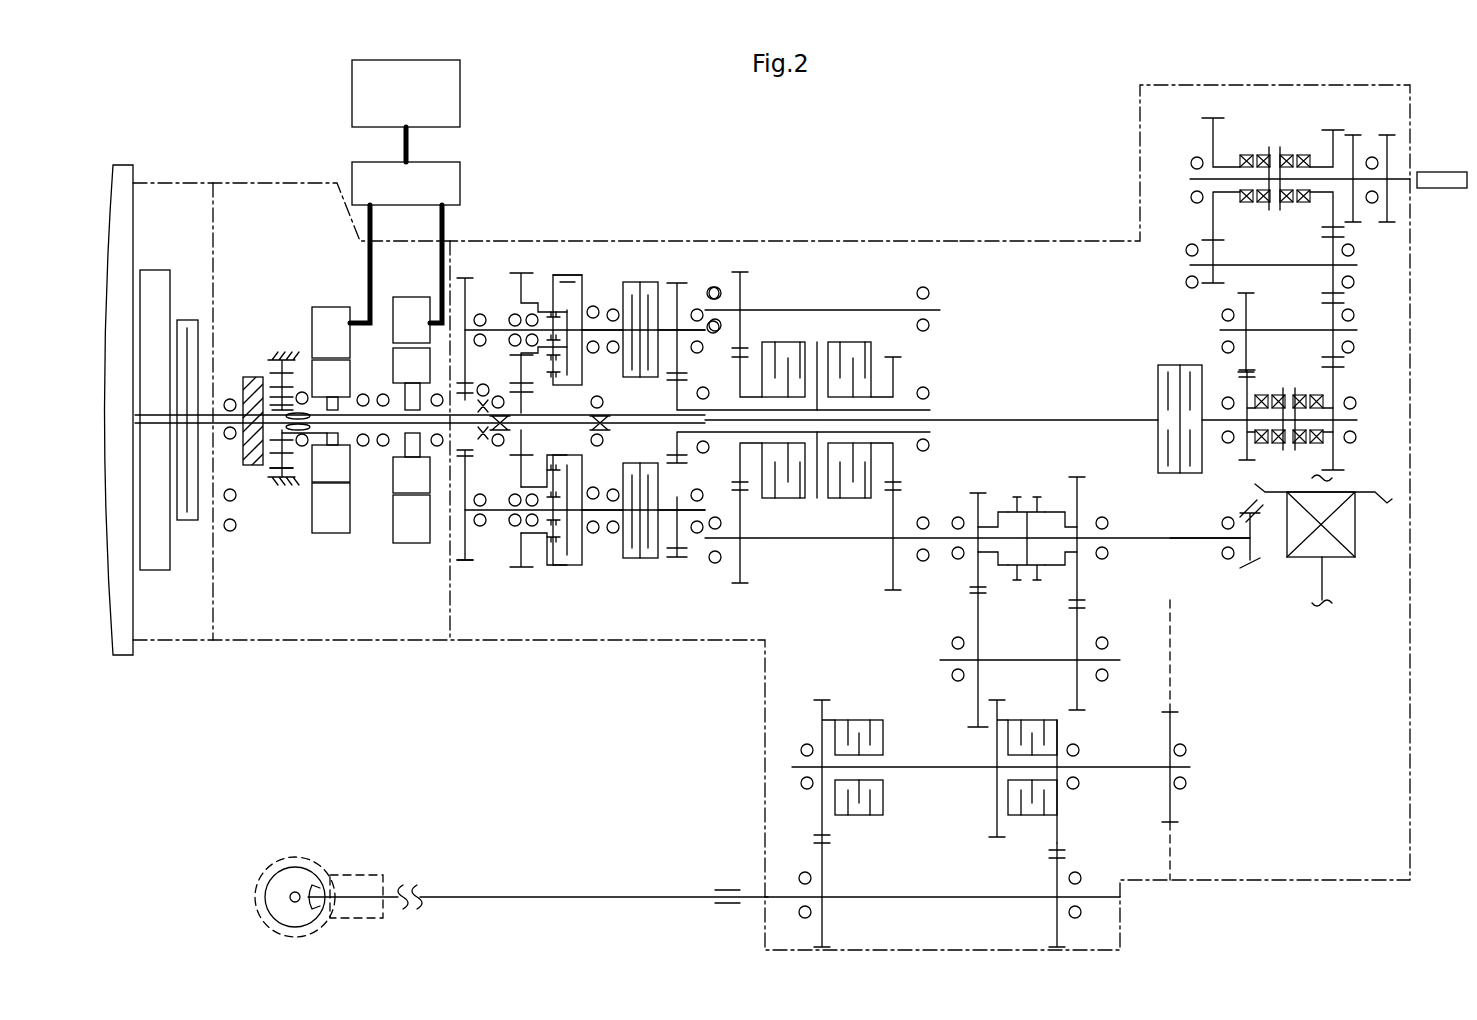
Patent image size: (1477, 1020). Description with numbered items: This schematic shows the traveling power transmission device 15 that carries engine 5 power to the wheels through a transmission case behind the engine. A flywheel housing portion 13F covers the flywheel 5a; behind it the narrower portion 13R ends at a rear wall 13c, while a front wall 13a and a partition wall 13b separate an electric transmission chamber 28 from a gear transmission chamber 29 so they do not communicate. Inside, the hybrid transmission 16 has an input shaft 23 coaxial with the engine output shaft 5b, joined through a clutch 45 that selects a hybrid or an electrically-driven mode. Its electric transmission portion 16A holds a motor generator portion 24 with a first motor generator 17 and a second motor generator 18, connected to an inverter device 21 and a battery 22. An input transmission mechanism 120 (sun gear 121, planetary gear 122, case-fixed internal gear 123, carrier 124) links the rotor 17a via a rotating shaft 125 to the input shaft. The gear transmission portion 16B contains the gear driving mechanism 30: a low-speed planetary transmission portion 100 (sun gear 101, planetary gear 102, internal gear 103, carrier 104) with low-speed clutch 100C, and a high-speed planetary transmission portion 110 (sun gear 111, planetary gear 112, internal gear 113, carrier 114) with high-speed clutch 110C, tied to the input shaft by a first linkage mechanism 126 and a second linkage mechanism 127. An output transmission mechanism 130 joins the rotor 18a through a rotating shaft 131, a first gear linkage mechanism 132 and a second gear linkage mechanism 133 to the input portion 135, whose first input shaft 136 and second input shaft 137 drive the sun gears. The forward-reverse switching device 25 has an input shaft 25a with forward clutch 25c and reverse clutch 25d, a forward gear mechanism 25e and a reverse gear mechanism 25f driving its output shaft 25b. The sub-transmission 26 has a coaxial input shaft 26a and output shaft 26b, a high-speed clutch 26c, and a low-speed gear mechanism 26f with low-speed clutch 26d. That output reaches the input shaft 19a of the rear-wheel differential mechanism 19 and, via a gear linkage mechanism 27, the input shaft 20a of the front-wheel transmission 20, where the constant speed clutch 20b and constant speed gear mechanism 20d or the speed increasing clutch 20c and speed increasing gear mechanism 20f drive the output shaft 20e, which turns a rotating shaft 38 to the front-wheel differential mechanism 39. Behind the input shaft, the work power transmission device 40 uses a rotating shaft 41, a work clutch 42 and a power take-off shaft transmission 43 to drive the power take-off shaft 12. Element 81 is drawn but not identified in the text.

The engine 5 is at (134, 225).
The flywheel 5a is at (172, 292).
The output shaft 5b is at (199, 465).
The power take-off shaft 12 is at (1447, 190).
The flywheel housing portion 13F is at (245, 183).
The rearward portion of the transmission case 13R is at (960, 240).
The front wall 13a is at (212, 600).
The partition wall 13b is at (450, 605).
The rear wall 13c is at (1412, 455).
The traveling power transmission device 15 is at (835, 170).
The hybrid transmission 16 is at (583, 613).
The electric transmission portion 16A is at (305, 628).
The gear transmission portion 16B is at (735, 603).
The first motor generator 17 is at (354, 411).
The rotor 17a is at (345, 490).
The second motor generator 18 is at (398, 374).
The rotor 18a is at (397, 360).
The rear-wheel differential mechanism 19 is at (1295, 575).
The input shaft 19a is at (1193, 540).
The front-wheel transmission 20 is at (977, 788).
The input shaft 20a is at (930, 766).
The constant speed clutch 20b is at (850, 815).
The speed increasing clutch 20c is at (1030, 815).
The constant speed gear mechanism 20d is at (822, 722).
The output shaft 20e is at (960, 898).
The speed increasing gear mechanism 20f is at (1060, 840).
The inverter device 21 is at (405, 242).
The battery 22 is at (406, 111).
The input shaft 23 is at (412, 395).
The motor generator portion 24 is at (288, 625).
The forward-reverse switching device 25 is at (872, 403).
The input shaft 25a is at (905, 410).
The output shaft 25b is at (770, 540).
The forward clutch 25c is at (860, 342).
The reverse clutch 25d is at (800, 342).
The forward gear mechanism 25e is at (892, 565).
The reverse gear mechanism 25f is at (745, 290).
The sub-transmission 26 is at (1079, 546).
The input shaft 26a is at (950, 540).
The output shaft 26b is at (1145, 537).
The high-speed clutch 26c is at (1003, 512).
The low-speed clutch 26d is at (1050, 512).
The low-speed gear mechanism 26f is at (1092, 618).
The gear linkage mechanism 27 is at (1182, 735).
The electric transmission chamber 28 is at (262, 227).
The gear transmission chamber 29 is at (1100, 283).
The gear driving mechanism 30 is at (690, 268).
The rotating shaft 38 is at (597, 882).
The front-wheel differential mechanism 39 is at (297, 857).
The work power transmission device 40 is at (1166, 364).
The rotating shaft 41 is at (1122, 405).
The work clutch 42 is at (1180, 365).
The power take-off shaft transmission 43 is at (1280, 294).
The clutch 45 is at (190, 523).
The parking brake 81 is at (253, 376).
The low-speed planetary transmission portion 100 is at (546, 564).
The low-speed clutch 100C is at (650, 545).
The sun gear 101 is at (590, 492).
The planetary gear 102 is at (567, 543).
The internal gear 103 is at (526, 573).
The carrier 104 is at (577, 450).
The high-speed planetary transmission portion 110 is at (578, 270).
The high-speed clutch 110C is at (640, 280).
The sun gear 111 is at (590, 320).
The planetary gear 112 is at (568, 366).
The internal gear 113 is at (574, 275).
The carrier 114 is at (548, 275).
The input transmission mechanism 120 is at (271, 406).
The sun gear 121 is at (233, 396).
The planetary gear 122 is at (292, 388).
The internal gear 123 is at (303, 480).
The carrier 124 is at (273, 478).
The rotating shaft 125 is at (377, 447).
The first linkage mechanism 126 is at (513, 565).
The second linkage mechanism 127 is at (520, 303).
The output transmission mechanism 130 is at (581, 278).
The rotating shaft 131 is at (503, 433).
The first gear linkage mechanism 132 is at (462, 545).
The second gear linkage mechanism 133 is at (470, 302).
The input portion 135 is at (462, 590).
The first input shaft 136 is at (503, 513).
The second input shaft 137 is at (503, 337).